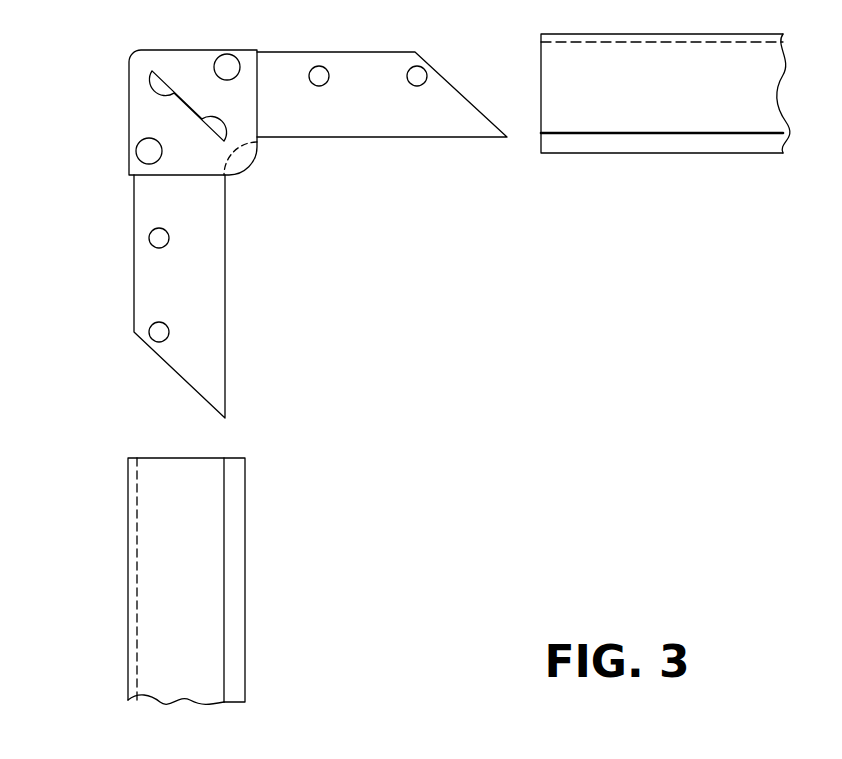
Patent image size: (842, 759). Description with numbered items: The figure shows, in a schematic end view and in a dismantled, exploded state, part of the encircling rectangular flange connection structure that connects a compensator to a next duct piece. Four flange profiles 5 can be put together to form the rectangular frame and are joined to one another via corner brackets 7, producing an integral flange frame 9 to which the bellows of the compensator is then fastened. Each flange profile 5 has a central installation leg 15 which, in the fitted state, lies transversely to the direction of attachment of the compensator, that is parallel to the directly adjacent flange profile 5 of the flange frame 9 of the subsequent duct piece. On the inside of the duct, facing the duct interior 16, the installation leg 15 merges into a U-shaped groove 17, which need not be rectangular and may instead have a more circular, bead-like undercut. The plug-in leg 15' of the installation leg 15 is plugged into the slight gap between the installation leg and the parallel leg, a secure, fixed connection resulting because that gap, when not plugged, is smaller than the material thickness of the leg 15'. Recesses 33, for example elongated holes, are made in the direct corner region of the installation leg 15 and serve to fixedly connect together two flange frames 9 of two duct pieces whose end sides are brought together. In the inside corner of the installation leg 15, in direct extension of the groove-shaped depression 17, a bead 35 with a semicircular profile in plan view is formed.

The corner bracket 7 is at (100, 130).
The recess 33 is at (172, 93).
The bead 35 is at (246, 163).
The plug-in leg 15' is at (280, 235).
The flange profile 5 is at (594, 122).
The installation leg 15 is at (493, 280).
The U-shaped groove 17 is at (560, 145).
The flange frame 9 is at (102, 658).
The duct interior 16 is at (510, 442).